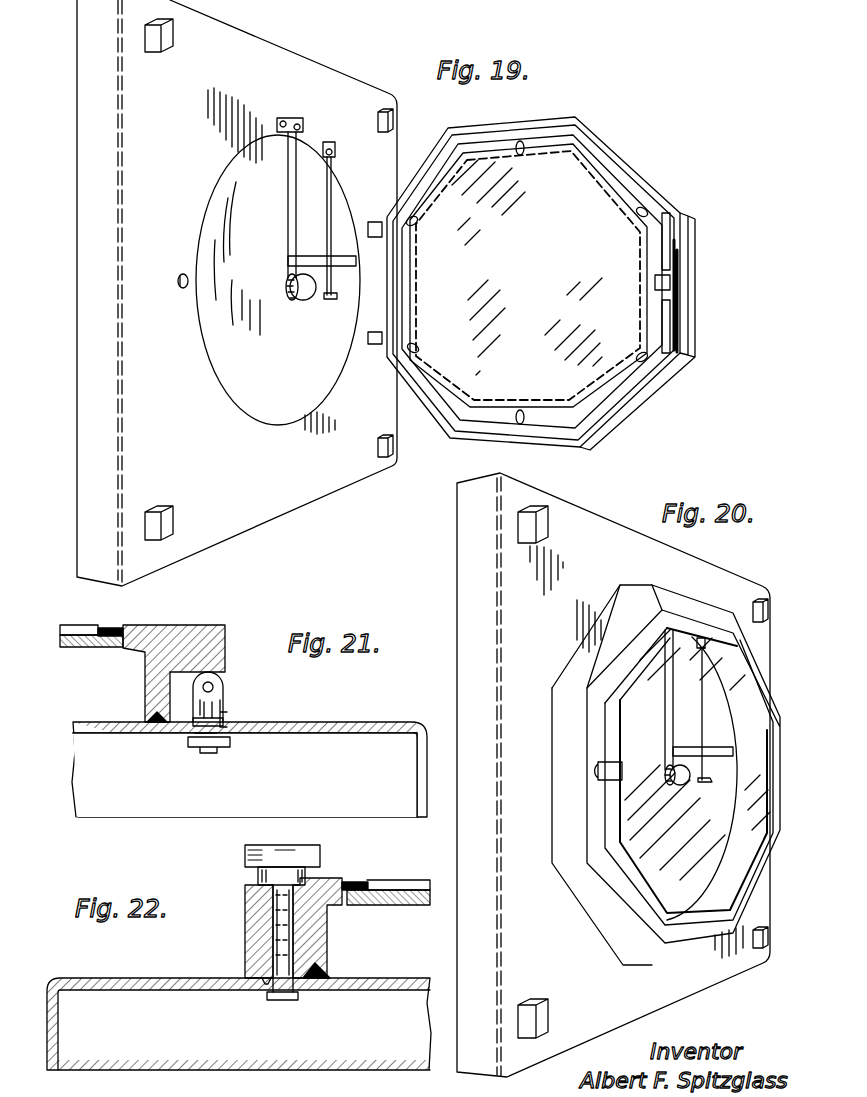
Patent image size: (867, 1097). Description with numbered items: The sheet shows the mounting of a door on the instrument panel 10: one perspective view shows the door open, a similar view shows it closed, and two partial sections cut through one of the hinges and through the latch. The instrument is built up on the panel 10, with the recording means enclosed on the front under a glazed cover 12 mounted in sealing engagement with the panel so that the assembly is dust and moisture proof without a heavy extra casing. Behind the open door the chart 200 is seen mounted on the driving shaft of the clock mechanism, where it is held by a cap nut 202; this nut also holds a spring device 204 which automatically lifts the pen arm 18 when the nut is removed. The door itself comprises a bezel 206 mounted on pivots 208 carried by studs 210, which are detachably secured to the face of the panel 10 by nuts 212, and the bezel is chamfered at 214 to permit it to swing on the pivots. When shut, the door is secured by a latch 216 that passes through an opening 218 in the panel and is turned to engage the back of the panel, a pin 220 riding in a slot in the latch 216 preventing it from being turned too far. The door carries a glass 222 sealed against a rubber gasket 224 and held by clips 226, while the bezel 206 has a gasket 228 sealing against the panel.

In FIG. 19, the panel 10 is at (128, 378).
In FIG. 20, the panel 10 is at (568, 515).
In FIG. 21, the panel 10 is at (318, 728).
In FIG. 22, the panel 10 is at (140, 975).
In FIG. 19, the glazed cover 12 is at (640, 168).
In FIG. 20, the glazed cover 12 is at (585, 918).
In FIG. 19, the pen arm 18 is at (331, 188).
In FIG. 20, the pen arm 18 is at (703, 712).
In FIG. 19, the chart 200 is at (262, 412).
In FIG. 20, the chart 200 is at (702, 778).
In FIG. 19, the cap nut 202 is at (300, 300).
In FIG. 20, the cap nut 202 is at (676, 786).
In FIG. 19, the spring device 204 is at (317, 257).
In FIG. 20, the spring device 204 is at (687, 752).
In FIG. 19, the bezel 206 is at (678, 253).
In FIG. 20, the bezel 206 is at (660, 955).
In FIG. 21, the bezel 206 is at (143, 625).
In FIG. 22, the bezel 206 is at (340, 880).
In FIG. 21, the pivot 208 is at (215, 687).
In FIG. 19, the stud 210 is at (372, 222).
In FIG. 21, the stud 210 is at (225, 707).
In FIG. 21, the nut 212 is at (218, 745).
In FIG. 21, the chamfer 214 is at (218, 722).
In FIG. 22, the latch 216 is at (262, 984).
In FIG. 19, the opening 218 is at (180, 288).
In FIG. 22, the pin 220 is at (307, 885).
In FIG. 21, the glass 222 is at (82, 640).
In FIG. 22, the glass 222 is at (396, 902).
In FIG. 21, the rubber gasket 224 is at (118, 628).
In FIG. 22, the rubber gasket 224 is at (370, 882).
In FIG. 19, the clip 226 is at (418, 345).
In FIG. 21, the gasket 228 is at (155, 724).
In FIG. 22, the gasket 228 is at (312, 981).